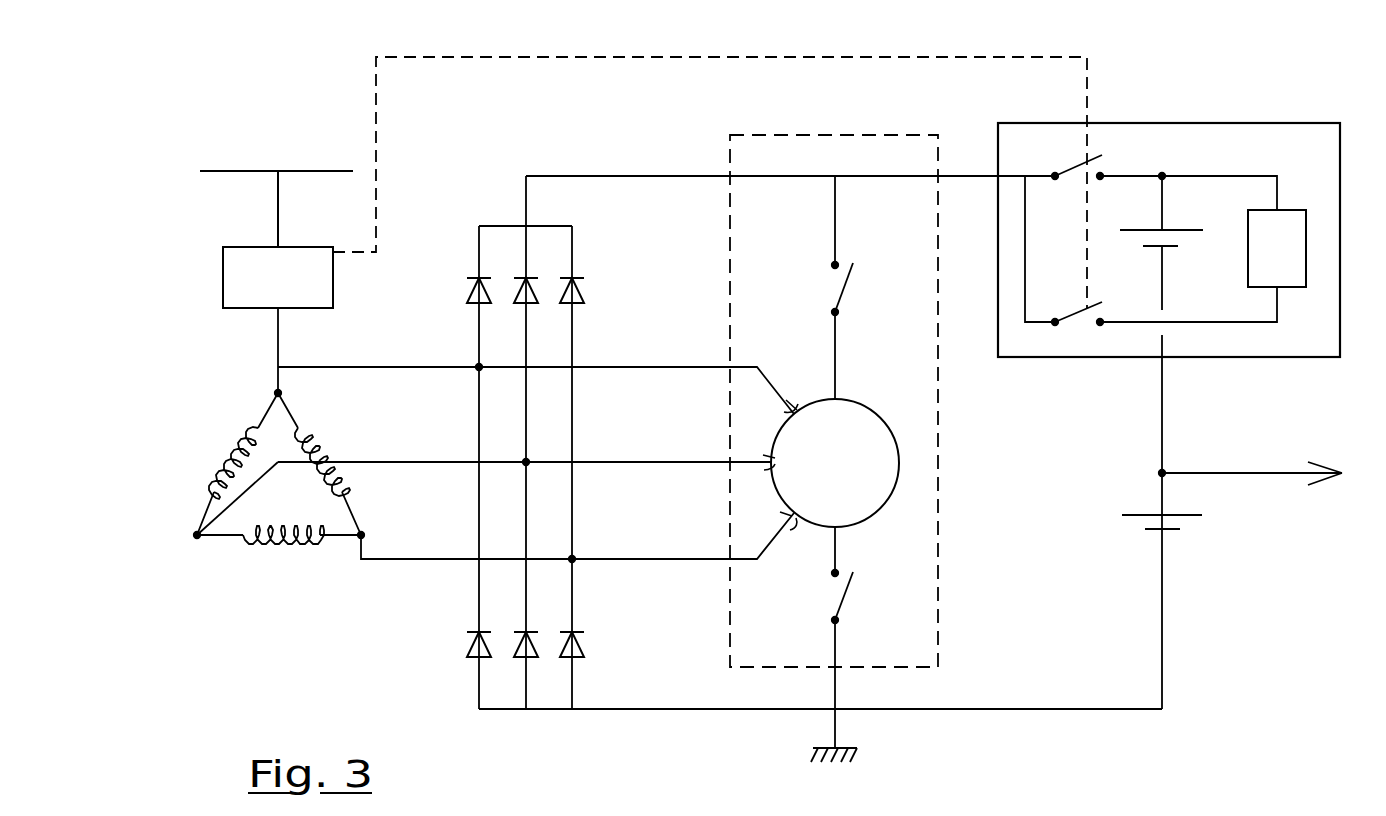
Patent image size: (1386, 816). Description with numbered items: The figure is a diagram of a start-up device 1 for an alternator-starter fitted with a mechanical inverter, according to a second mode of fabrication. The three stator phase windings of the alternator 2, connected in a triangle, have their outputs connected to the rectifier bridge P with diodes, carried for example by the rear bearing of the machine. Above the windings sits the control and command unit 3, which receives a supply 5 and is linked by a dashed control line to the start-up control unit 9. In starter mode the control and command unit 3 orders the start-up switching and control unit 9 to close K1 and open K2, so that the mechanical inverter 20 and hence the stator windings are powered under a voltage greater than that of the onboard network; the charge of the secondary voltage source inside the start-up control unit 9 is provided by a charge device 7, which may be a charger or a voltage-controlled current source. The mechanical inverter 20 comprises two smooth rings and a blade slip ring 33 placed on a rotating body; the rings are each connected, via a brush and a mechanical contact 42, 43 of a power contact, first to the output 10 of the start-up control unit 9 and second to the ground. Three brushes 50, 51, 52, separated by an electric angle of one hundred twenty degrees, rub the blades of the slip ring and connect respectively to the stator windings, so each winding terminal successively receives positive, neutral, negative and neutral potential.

The starter-alternator control circuit 1 is at (656, 751).
The alternator 2 is at (174, 574).
The control and command unit 3 is at (321, 290).
The supply / battery voltage 5 is at (300, 171).
The charge device 7 is at (1248, 248).
The start-up control unit 9 is at (1188, 416).
The output 10 is at (970, 175).
The mechanical inverter 20 is at (805, 133).
The blade slip ring 33 is at (893, 418).
The mechanical contact 42 is at (845, 290).
The mechanical contact 43 is at (845, 600).
The brush 50 is at (800, 404).
The brush 51 is at (766, 458).
The brush 52 is at (796, 524).
The rectifier bridge P is at (470, 614).
The element K1 is at (1080, 163).
The element K2 is at (1078, 303).